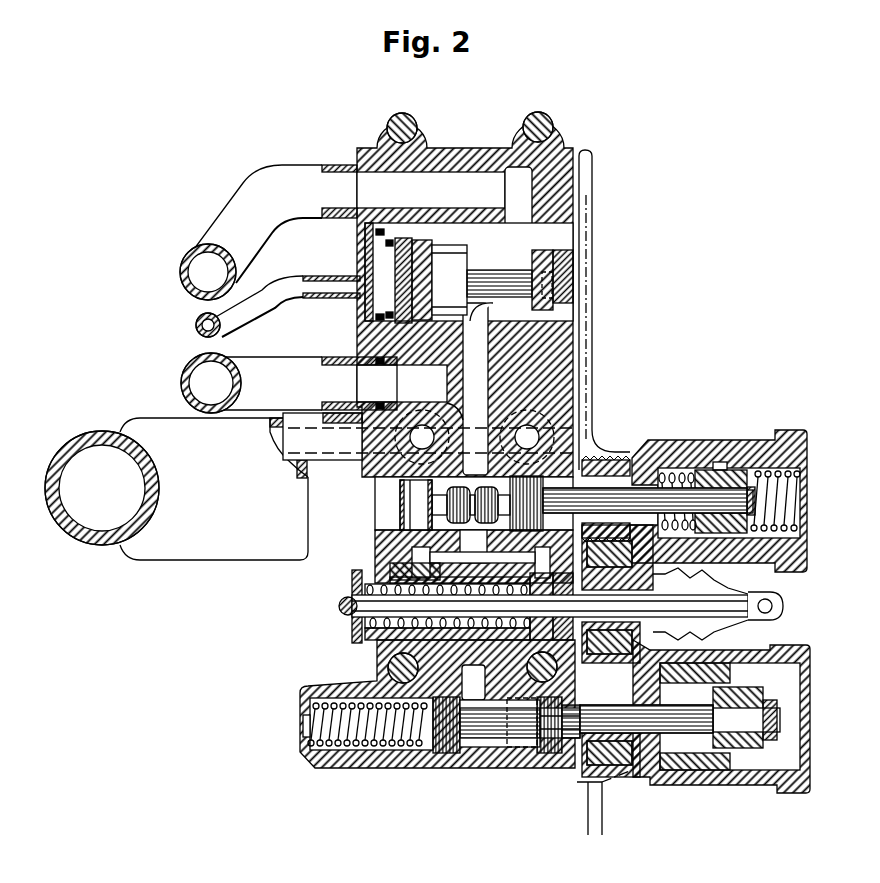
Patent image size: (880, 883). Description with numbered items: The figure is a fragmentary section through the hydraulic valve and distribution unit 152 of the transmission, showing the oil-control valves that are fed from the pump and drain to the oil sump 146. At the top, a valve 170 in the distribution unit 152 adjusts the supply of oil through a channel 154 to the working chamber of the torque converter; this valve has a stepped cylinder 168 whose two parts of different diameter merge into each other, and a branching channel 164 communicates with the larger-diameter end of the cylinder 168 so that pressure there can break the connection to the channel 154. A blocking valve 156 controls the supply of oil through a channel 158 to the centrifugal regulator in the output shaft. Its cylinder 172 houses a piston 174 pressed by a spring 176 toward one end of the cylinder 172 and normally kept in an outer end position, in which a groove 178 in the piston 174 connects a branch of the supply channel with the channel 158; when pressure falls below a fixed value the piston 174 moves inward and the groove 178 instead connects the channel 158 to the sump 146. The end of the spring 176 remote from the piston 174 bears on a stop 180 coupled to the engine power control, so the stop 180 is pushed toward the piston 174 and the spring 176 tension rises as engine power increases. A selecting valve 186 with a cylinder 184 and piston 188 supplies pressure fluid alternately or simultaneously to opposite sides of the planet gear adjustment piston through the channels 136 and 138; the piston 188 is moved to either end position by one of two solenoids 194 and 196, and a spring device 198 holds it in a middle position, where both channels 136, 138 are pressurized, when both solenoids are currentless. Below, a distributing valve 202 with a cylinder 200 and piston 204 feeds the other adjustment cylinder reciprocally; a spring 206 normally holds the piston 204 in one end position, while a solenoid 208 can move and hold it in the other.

The channel 136 is at (372, 466).
The channel 138 is at (562, 410).
The oil sump 146 is at (245, 548).
The valve and distribution unit 152 is at (629, 246).
The channel 154 is at (262, 200).
The blocking valve 156 is at (378, 642).
The channel 158 is at (258, 364).
The branching channel 164 is at (280, 290).
The cylinder 168 is at (535, 312).
The valve 170 is at (548, 262).
The cylinder 172 is at (378, 669).
The piston 174 is at (352, 582).
The spring 176 is at (340, 603).
The groove 178 is at (392, 574).
The stop 180 is at (360, 632).
The cylinder 184 is at (374, 546).
The selecting valve 186 is at (378, 518).
The piston 188 is at (384, 497).
The solenoid 194 is at (709, 442).
The solenoid 196 is at (752, 442).
The spring device 198 is at (670, 442).
The cylinder 200 is at (486, 748).
The distributing valve 202 is at (405, 748).
The piston 204 is at (585, 770).
The spring 206 is at (365, 768).
The solenoid 208 is at (685, 785).